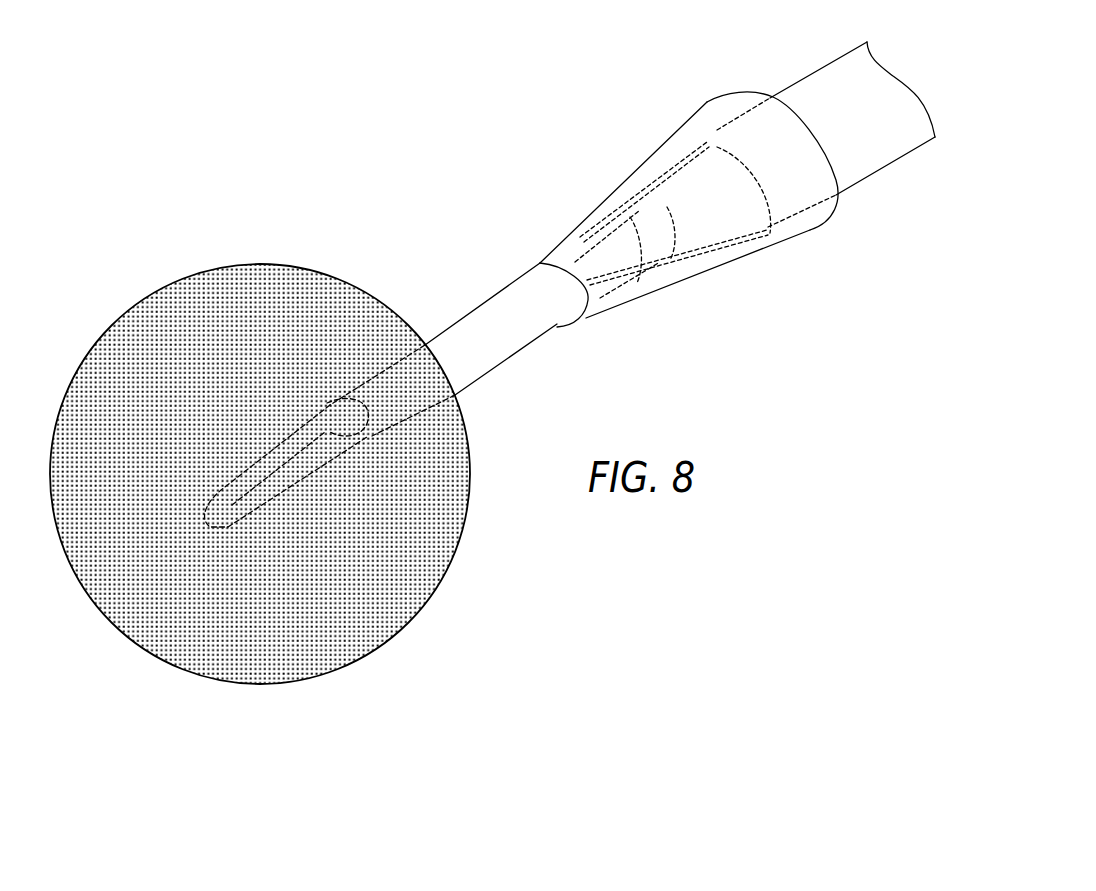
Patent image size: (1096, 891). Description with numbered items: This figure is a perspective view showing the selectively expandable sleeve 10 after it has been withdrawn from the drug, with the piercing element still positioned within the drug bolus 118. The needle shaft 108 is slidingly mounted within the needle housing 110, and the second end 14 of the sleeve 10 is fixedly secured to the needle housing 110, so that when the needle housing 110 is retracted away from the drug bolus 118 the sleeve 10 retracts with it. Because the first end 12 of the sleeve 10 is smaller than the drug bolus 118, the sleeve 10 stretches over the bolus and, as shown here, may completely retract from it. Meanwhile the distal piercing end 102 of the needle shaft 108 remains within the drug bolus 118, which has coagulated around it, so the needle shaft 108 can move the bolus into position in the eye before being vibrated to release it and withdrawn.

The selectively expandable sleeve 10 is at (680, 203).
The first end 12 is at (557, 327).
The second end 14 is at (723, 92).
The distal piercing end 102 is at (250, 441).
The needle shaft 108 is at (488, 307).
The needle housing 110 is at (828, 78).
The drug bolus 118 is at (315, 670).